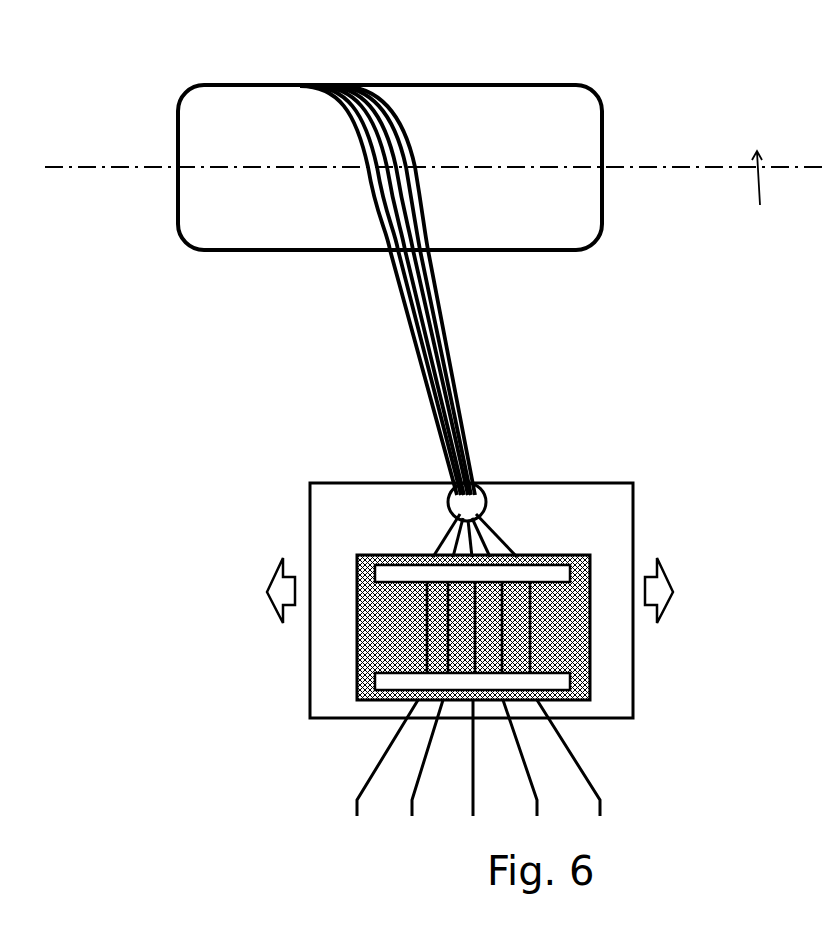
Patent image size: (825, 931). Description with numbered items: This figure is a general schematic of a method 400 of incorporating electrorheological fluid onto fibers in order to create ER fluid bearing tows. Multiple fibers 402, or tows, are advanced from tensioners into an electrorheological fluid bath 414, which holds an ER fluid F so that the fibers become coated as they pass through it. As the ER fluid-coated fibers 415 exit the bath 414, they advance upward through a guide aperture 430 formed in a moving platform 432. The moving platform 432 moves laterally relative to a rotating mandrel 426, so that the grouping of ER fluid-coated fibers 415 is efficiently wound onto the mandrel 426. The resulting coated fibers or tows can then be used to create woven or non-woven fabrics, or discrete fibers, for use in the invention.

The method of incorporating ER fluid onto a fiber 400 is at (727, 101).
The rotating mandrel 426 is at (510, 126).
The ER fluid-coated fibers 415 is at (423, 243).
The guide aperture 430 is at (478, 481).
The electrorheological fluid bath 414 is at (580, 555).
The moving platform 432 is at (620, 663).
The fibers 402 is at (597, 760).
The ER fluid F is at (385, 643).